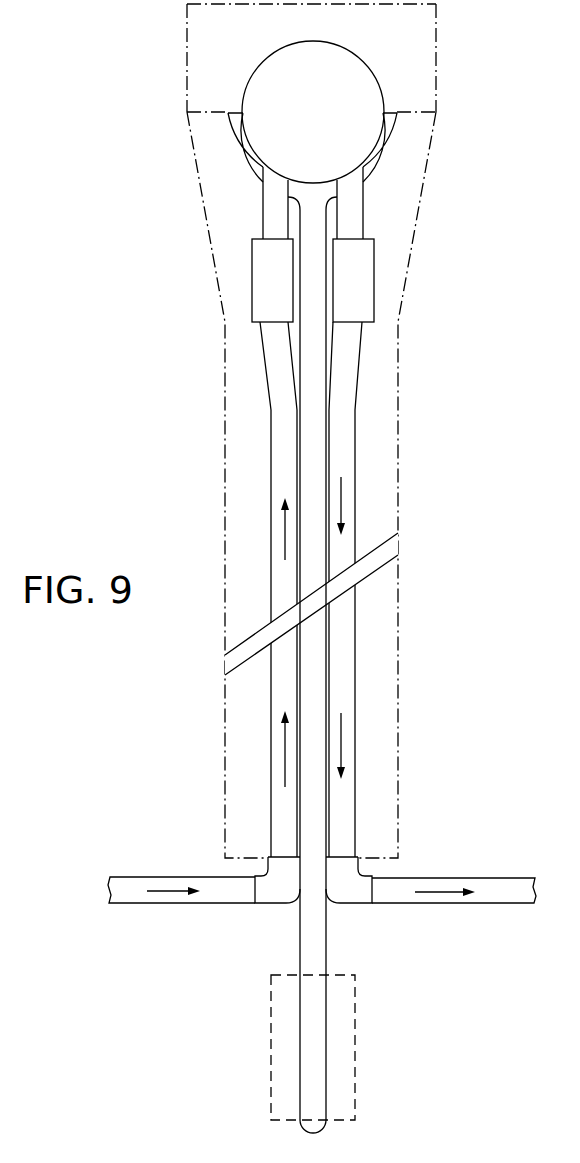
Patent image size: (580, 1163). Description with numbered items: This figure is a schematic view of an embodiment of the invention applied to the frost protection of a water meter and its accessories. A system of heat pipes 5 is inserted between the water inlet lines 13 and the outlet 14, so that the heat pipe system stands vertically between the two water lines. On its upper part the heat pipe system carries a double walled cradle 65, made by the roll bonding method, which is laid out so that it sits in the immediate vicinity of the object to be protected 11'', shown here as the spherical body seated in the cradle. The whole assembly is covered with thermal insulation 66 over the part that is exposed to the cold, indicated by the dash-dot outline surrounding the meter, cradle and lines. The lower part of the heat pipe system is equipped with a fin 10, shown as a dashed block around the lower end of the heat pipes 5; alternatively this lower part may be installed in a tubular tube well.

The thermal insulation 66 is at (185, 124).
The object to be protected 11'' is at (370, 112).
The double walled cradle 65 is at (391, 165).
The inlet lines 13 is at (278, 448).
The outlet 14 is at (347, 462).
The heat pipes 5 is at (318, 393).
The fin 10 is at (356, 1040).